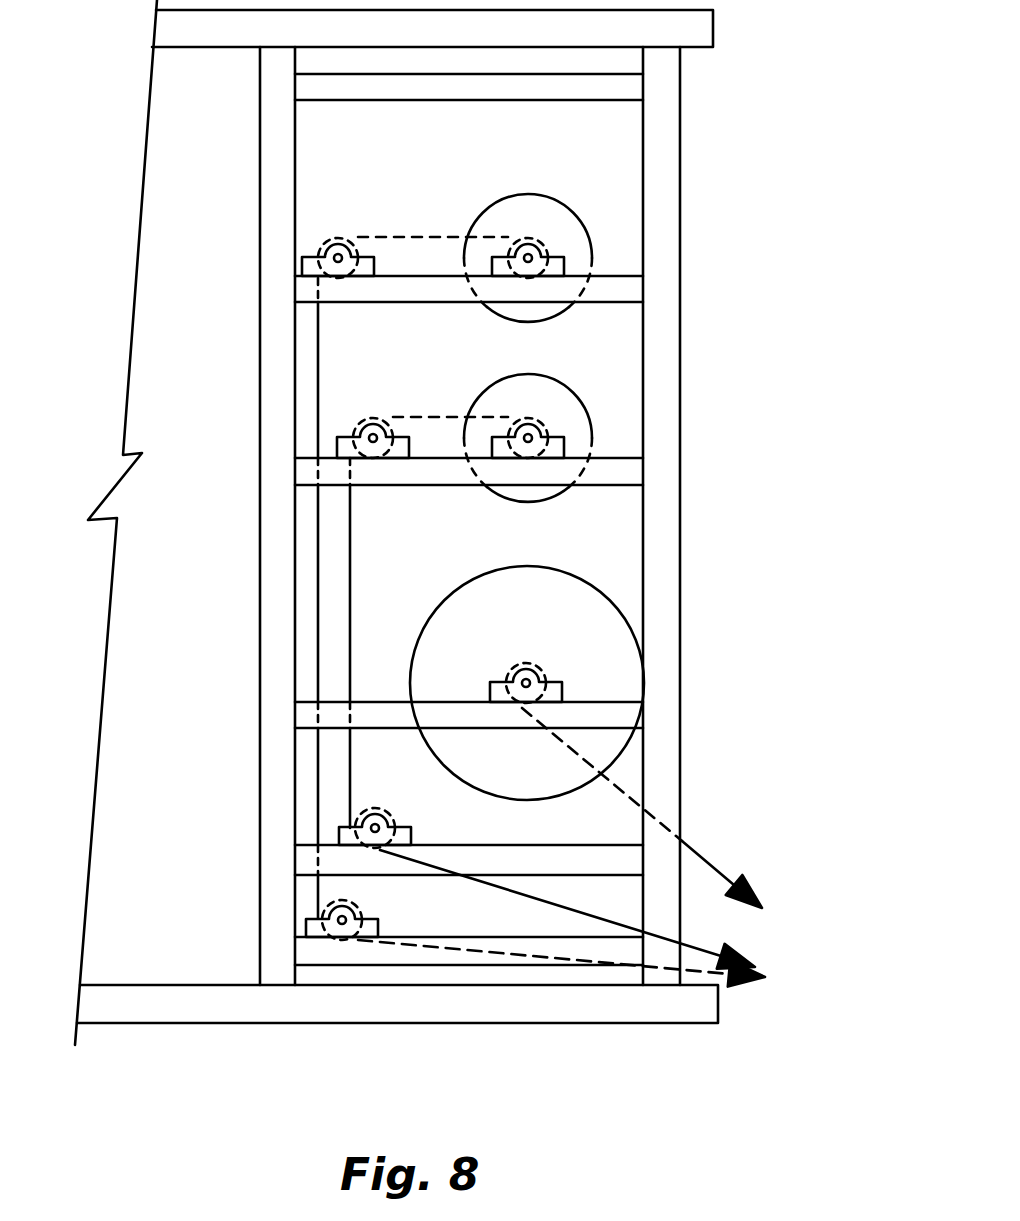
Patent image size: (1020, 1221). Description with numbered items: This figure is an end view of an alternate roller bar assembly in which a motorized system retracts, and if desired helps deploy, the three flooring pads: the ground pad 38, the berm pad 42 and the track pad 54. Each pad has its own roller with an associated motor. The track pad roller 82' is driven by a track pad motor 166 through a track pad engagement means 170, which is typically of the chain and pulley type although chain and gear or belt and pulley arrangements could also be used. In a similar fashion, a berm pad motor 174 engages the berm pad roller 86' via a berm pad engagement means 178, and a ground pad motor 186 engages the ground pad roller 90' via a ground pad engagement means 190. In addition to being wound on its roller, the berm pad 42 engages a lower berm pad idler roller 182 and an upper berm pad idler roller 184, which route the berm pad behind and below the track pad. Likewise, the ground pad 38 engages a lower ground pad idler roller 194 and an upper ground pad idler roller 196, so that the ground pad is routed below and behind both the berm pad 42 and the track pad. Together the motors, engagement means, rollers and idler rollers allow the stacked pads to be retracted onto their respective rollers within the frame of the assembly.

The ground pad 38 is at (523, 193).
The berm pad 42 is at (508, 376).
The track pad 54 is at (513, 566).
The ground pad roller 90' is at (642, 203).
The ground pad motor 186 is at (565, 266).
The ground pad engagement means 190 is at (528, 278).
The upper ground pad idler roller 196 is at (305, 263).
The berm pad roller 86' is at (641, 407).
The berm pad motor 174 is at (565, 447).
The berm pad engagement means 178 is at (545, 470).
The upper berm pad idler roller 184 is at (342, 440).
The track pad roller 82' is at (640, 642).
The track pad motor 166 is at (563, 690).
The track pad engagement means 170 is at (542, 711).
The lower berm pad idler roller 182 is at (342, 835).
The lower ground pad idler roller 194 is at (307, 928).